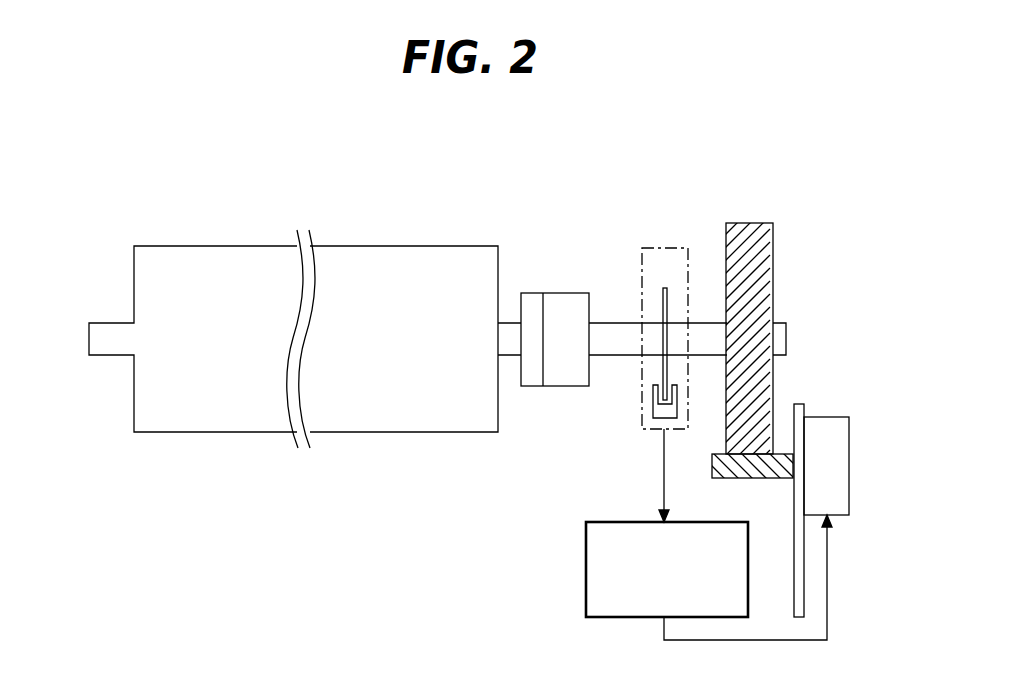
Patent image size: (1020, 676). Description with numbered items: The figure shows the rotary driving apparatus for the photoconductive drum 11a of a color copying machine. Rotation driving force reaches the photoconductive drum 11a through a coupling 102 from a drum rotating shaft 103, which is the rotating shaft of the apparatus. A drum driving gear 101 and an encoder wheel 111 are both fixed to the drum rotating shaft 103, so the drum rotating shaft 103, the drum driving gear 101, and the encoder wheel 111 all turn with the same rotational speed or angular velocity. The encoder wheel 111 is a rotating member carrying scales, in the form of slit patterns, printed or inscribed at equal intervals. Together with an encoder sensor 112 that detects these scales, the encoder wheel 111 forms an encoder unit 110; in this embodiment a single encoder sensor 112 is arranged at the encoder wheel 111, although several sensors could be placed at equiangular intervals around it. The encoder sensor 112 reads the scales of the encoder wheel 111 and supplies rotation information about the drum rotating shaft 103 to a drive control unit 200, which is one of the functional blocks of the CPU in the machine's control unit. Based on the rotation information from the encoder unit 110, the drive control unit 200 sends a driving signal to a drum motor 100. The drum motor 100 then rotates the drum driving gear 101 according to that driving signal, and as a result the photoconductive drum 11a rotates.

The photoconductive drum 11a is at (381, 246).
The drum motor 100 is at (828, 417).
The drum driving gear 101 is at (746, 223).
The coupling 102 is at (531, 293).
The drum rotating shaft 103 is at (787, 338).
The encoder unit 110 is at (665, 248).
The encoder wheel 111 is at (661, 367).
The encoder sensor 112 is at (652, 409).
The drive control unit 200 is at (585, 570).